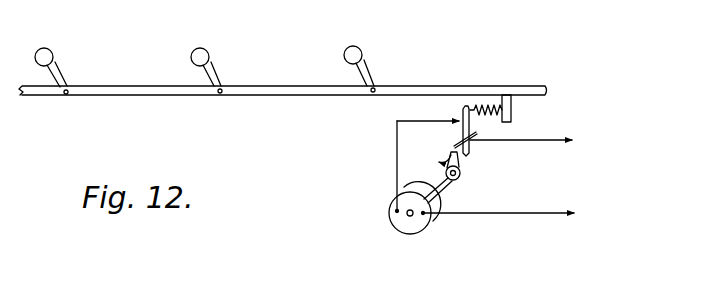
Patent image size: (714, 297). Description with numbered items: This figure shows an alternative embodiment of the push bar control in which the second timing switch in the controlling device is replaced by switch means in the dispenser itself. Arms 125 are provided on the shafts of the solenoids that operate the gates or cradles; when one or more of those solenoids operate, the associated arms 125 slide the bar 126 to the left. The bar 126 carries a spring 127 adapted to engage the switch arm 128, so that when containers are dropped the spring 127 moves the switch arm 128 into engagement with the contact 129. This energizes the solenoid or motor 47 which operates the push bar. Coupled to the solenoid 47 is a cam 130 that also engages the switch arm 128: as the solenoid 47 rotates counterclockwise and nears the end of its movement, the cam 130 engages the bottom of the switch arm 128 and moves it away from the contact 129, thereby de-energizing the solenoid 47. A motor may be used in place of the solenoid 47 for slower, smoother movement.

The solenoid or motor 47 is at (410, 230).
The arms 125 is at (58, 65).
The bar 126 is at (470, 88).
The spring 127 is at (491, 112).
The switch arm 128 is at (462, 108).
The contact 129 is at (457, 126).
The cam 130 is at (462, 176).